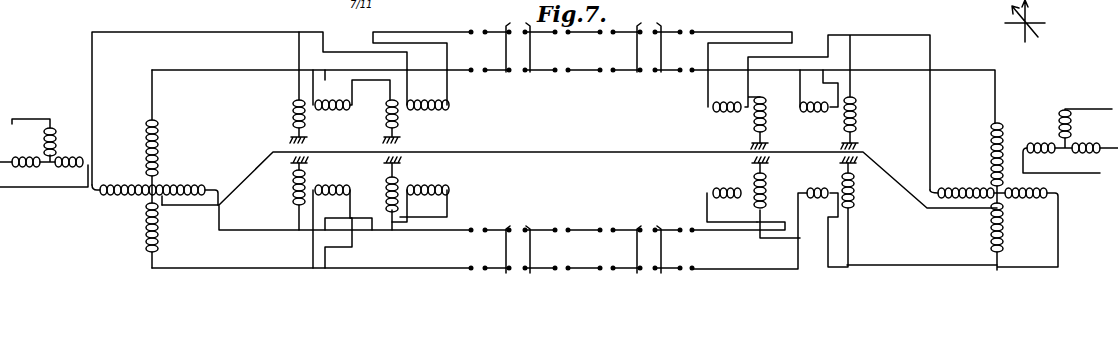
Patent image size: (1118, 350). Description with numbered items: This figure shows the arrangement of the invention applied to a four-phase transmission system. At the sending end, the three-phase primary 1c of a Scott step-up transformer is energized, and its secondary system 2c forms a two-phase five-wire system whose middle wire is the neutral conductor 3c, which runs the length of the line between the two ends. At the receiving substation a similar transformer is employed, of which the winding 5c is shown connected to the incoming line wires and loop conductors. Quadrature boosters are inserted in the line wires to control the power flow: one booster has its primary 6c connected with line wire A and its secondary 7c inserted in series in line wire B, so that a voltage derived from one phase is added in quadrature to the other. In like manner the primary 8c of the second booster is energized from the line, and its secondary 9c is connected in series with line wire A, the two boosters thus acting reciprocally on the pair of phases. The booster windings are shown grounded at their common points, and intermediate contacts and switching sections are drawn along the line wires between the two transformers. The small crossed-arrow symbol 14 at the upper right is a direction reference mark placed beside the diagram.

The three-phase primary 1c is at (60, 190).
The secondary system 2c is at (152, 194).
The neutral conductor 3c is at (910, 195).
The transformer secondary 5c is at (1002, 198).
The quadrature booster primary 6c is at (290, 131).
The quadrature booster secondary 7c is at (351, 150).
The booster primary 8c is at (390, 118).
The booster secondary 9c is at (430, 108).
The direction indicator 14 is at (1040, 28).